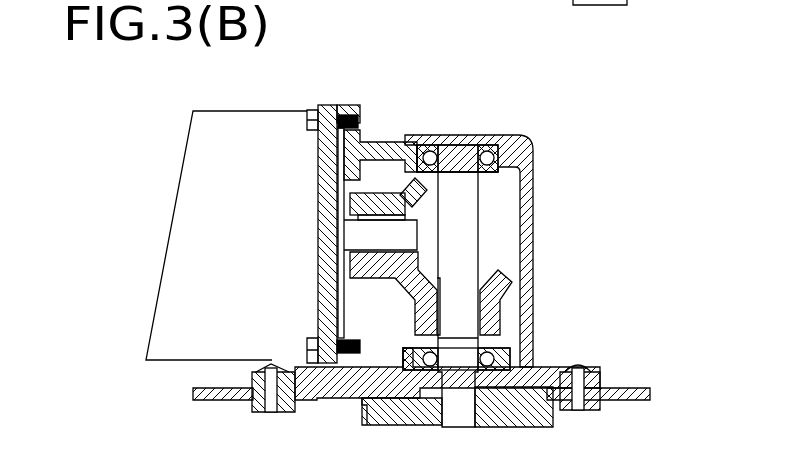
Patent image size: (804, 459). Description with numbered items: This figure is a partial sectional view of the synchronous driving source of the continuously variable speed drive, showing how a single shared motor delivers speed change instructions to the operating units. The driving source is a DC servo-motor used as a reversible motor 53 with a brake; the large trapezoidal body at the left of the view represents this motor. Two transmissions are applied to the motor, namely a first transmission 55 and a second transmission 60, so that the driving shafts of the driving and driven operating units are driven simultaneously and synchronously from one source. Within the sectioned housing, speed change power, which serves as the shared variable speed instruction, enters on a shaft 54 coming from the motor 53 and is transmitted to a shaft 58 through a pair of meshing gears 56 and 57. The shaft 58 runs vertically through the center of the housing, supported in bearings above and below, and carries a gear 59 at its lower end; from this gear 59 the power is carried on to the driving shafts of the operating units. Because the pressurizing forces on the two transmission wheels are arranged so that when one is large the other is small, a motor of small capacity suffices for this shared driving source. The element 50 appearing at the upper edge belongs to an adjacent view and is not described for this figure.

The drive unit 50 is at (618, 2).
The reversible motor 53 is at (233, 135).
The shaft 54 is at (365, 235).
The first transmission 55 is at (433, 110).
The gear 56 is at (377, 200).
The gear 57 is at (490, 307).
The shaft 58 is at (470, 200).
The gear 59 is at (555, 412).
The second transmission 60 is at (597, 388).